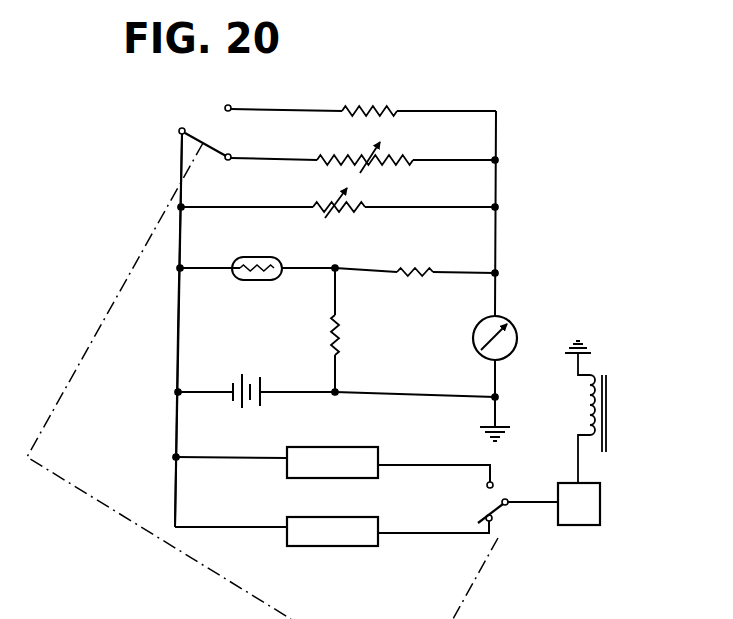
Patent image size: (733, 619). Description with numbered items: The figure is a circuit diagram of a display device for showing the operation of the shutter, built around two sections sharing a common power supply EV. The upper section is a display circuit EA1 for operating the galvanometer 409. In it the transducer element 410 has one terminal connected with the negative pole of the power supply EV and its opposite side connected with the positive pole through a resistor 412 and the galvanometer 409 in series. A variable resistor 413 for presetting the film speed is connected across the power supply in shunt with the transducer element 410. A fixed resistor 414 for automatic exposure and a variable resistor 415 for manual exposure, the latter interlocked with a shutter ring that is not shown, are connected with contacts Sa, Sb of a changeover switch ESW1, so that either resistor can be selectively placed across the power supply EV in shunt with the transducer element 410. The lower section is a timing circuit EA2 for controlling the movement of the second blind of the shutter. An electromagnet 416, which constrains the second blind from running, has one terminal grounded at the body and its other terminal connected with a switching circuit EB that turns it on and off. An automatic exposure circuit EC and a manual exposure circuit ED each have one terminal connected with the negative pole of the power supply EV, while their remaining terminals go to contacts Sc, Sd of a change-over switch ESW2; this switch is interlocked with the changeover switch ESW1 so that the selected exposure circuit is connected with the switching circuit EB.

The galvanometer 409 is at (503, 322).
The transducer element 410 is at (255, 284).
The resistor 412 is at (418, 285).
The variable resistor 413 is at (362, 205).
The fixed resistor 414 is at (358, 78).
The variable resistor 415 is at (413, 160).
The electromagnet 416 is at (593, 417).
The changeover switch ESW1 is at (203, 143).
The change-over switch ESW2 is at (492, 514).
The contact Sa is at (229, 105).
The contact Sb is at (229, 160).
The contact Sc is at (492, 481).
The contact Sd is at (503, 523).
The display circuit EA1 is at (178, 312).
The timing circuit EA2 is at (172, 480).
The power supply EV is at (250, 383).
The automatic exposure circuit EC is at (357, 447).
The manual exposure circuit ED is at (372, 547).
The switching circuit EB is at (584, 528).